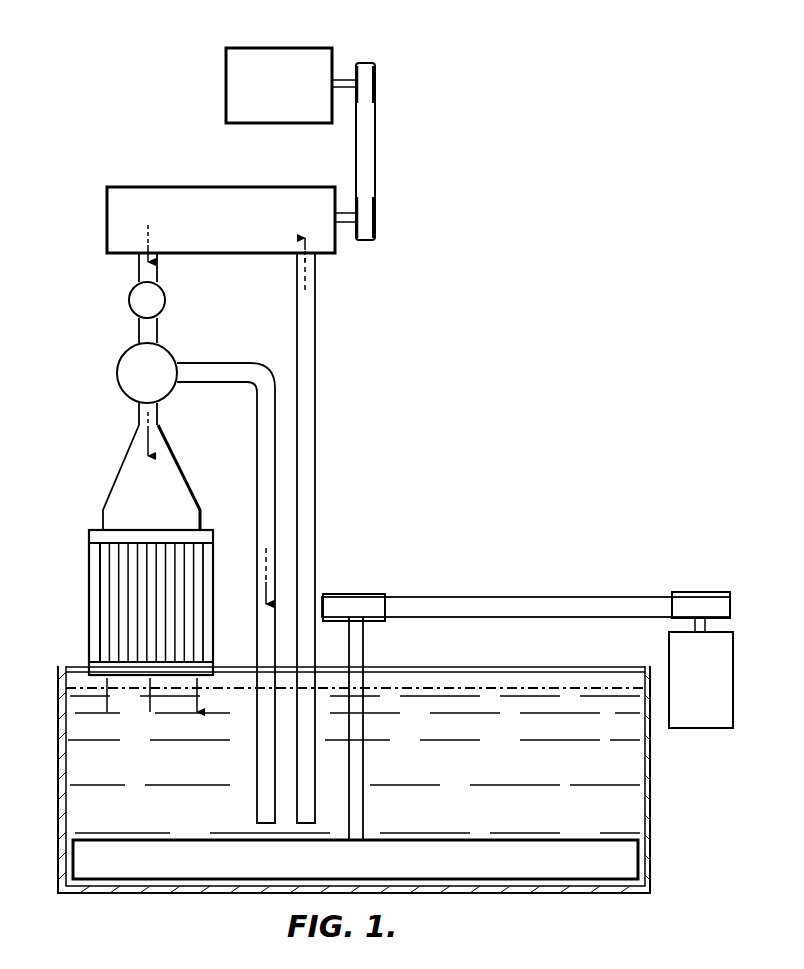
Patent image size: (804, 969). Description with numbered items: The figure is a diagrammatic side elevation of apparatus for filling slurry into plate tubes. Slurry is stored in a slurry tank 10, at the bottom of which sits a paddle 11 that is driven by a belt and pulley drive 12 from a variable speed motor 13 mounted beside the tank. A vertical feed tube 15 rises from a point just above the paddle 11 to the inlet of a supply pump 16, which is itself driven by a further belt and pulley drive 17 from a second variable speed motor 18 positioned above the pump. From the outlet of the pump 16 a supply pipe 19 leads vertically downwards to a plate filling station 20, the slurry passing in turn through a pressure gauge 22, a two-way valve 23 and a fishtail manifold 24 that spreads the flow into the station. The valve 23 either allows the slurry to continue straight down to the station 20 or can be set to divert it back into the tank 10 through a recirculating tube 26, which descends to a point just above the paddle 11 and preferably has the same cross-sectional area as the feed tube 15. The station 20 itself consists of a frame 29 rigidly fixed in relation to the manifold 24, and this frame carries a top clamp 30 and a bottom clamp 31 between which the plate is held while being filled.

The slurry tank 10 is at (650, 823).
The paddle 11 is at (490, 868).
The belt and pulley drive 12 is at (519, 597).
The variable speed motor 13 is at (695, 712).
The vertical feed tube 15 is at (306, 356).
The supply pump 16 is at (147, 187).
The belt and pulley drive 17 is at (367, 140).
The variable speed motor 18 is at (280, 55).
The supply pipe 19 is at (139, 332).
The plate filling station 20 is at (88, 600).
The pressure gauge 22 is at (130, 295).
The two-way valve 23 is at (130, 392).
The fishtail manifold 24 is at (120, 492).
The recirculating tube 26 is at (260, 756).
The frame 29 is at (92, 636).
The top clamp 30 is at (95, 541).
The bottom clamp 31 is at (202, 665).